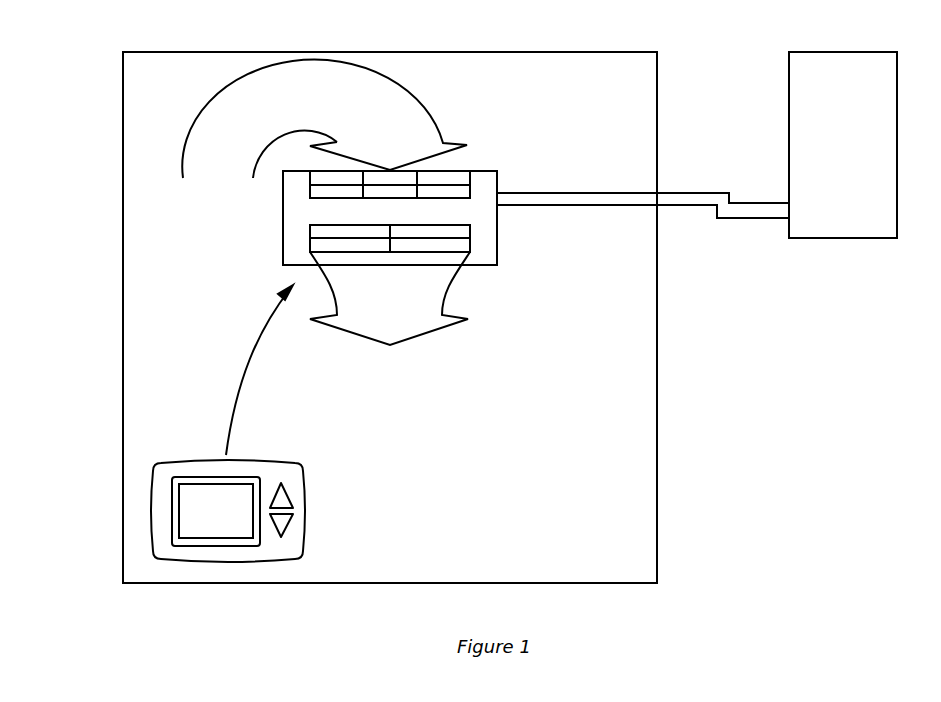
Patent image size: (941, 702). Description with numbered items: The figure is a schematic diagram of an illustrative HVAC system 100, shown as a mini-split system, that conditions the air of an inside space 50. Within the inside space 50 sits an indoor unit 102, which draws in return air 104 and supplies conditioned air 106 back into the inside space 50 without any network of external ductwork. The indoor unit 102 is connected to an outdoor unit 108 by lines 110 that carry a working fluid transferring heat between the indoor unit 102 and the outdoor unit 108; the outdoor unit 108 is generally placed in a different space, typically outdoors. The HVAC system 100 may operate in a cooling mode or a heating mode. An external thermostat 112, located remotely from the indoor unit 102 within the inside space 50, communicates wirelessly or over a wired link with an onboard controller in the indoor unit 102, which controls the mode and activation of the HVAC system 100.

The inside space 50 is at (642, 522).
The HVAC system 100 is at (533, 350).
The indoor unit 102 is at (485, 177).
The return air 104 is at (238, 115).
The conditioned air 106 is at (415, 327).
The outdoor unit 108 is at (845, 58).
The lines 110 is at (698, 190).
The external thermostat 112 is at (305, 510).